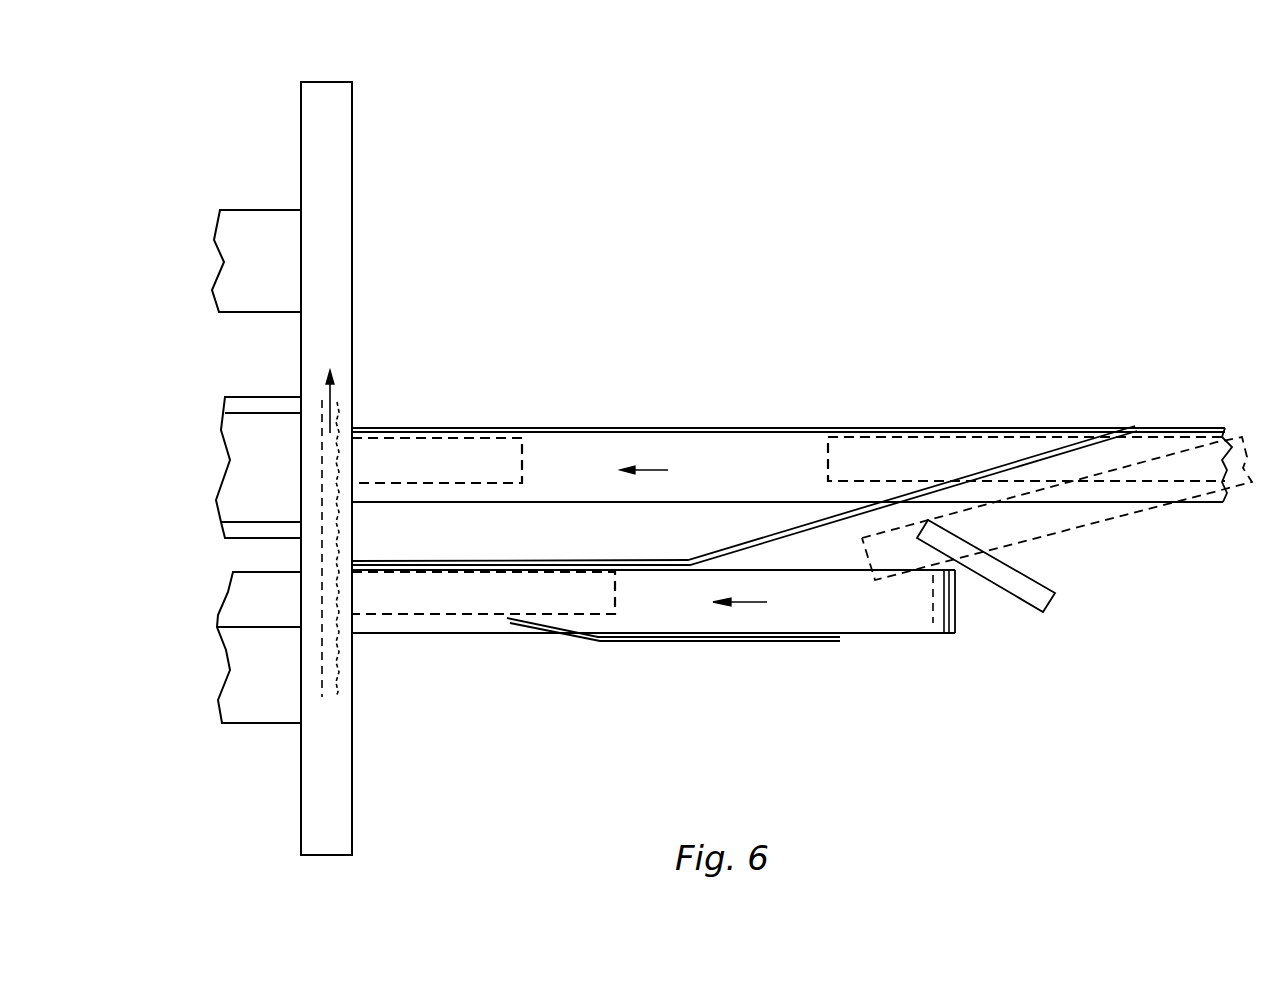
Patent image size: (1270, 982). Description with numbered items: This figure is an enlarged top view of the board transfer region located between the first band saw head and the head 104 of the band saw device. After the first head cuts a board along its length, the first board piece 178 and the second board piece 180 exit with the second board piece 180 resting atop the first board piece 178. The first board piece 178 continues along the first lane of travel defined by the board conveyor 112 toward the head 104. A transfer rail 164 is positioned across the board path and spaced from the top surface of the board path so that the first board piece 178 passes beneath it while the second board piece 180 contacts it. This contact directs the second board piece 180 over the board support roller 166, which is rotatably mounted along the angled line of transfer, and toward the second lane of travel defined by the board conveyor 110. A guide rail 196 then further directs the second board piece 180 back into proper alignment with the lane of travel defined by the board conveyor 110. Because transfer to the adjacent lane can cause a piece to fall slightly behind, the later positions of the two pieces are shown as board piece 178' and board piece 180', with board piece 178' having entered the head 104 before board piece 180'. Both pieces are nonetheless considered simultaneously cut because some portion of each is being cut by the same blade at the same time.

The head 104 is at (335, 82).
The board conveyor 112 is at (817, 440).
The board piece 178' is at (477, 414).
The first board piece 178 is at (1026, 423).
The transfer rail 164 is at (1060, 453).
The board support roller 166 is at (1052, 600).
The second board piece 180 is at (1057, 513).
The board piece 180' is at (483, 640).
The board conveyor 110 is at (946, 650).
The guide rail 196 is at (840, 641).